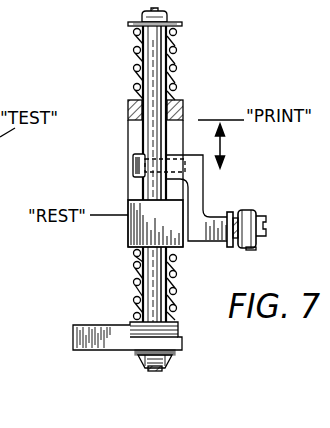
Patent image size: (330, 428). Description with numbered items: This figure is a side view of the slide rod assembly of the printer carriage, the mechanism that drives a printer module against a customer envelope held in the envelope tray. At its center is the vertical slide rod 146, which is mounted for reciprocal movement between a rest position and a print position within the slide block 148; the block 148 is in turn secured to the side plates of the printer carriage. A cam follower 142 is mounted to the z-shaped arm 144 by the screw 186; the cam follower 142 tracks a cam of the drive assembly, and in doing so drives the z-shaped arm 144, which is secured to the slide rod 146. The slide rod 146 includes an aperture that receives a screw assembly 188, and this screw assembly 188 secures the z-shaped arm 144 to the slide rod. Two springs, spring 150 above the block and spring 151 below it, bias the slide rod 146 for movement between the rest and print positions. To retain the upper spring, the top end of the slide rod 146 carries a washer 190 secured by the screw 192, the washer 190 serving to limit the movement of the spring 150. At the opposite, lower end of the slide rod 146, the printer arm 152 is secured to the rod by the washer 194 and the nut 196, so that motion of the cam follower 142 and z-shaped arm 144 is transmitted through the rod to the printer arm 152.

The cam follower 142 is at (251, 248).
The z-shaped arm 144 is at (205, 181).
The slide rod 146 is at (138, 70).
The slide block 148 is at (128, 106).
The spring 150 is at (176, 54).
The spring 151 is at (135, 266).
The printer arm 152 is at (73, 338).
The screw 186 is at (268, 222).
The screw assembly 188 is at (133, 168).
The washer 190 is at (130, 24).
The screw 192 is at (169, 16).
The washer 194 is at (177, 352).
The nut 196 is at (138, 362).